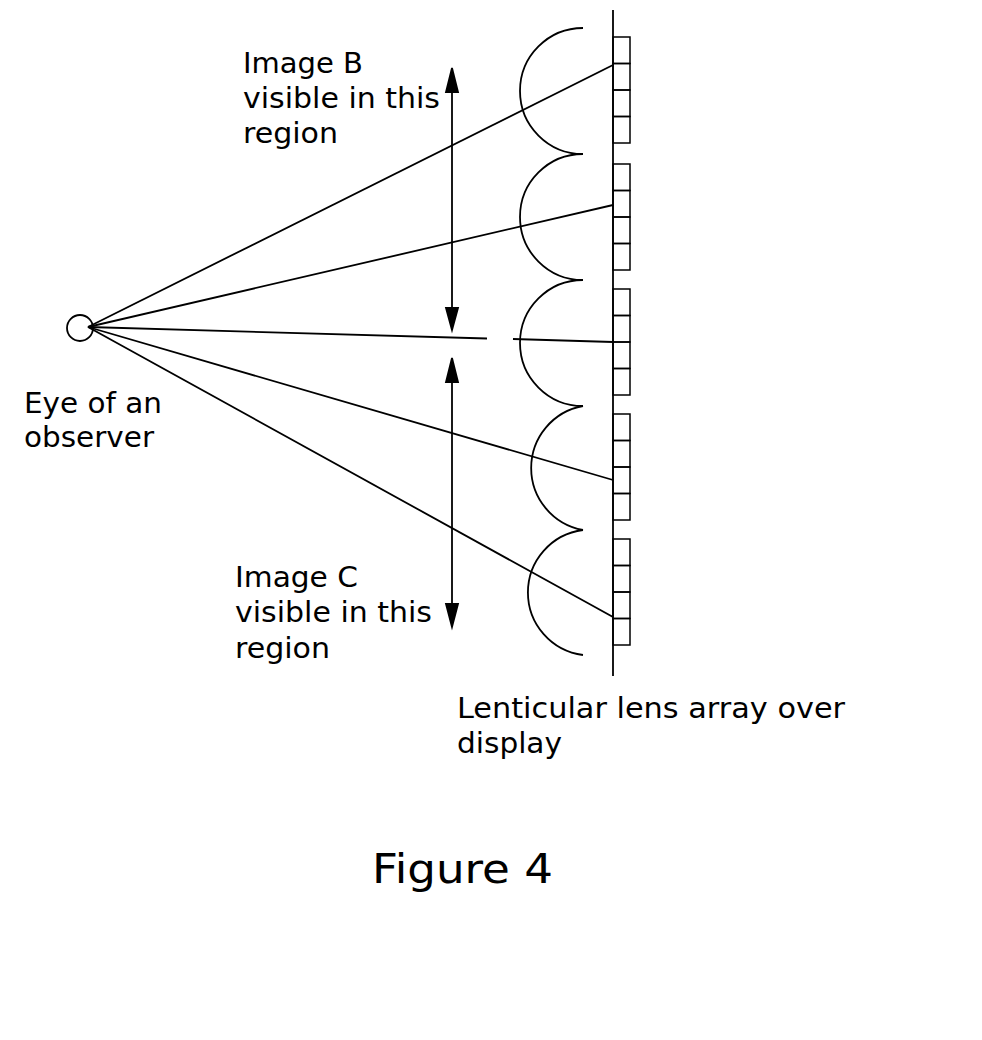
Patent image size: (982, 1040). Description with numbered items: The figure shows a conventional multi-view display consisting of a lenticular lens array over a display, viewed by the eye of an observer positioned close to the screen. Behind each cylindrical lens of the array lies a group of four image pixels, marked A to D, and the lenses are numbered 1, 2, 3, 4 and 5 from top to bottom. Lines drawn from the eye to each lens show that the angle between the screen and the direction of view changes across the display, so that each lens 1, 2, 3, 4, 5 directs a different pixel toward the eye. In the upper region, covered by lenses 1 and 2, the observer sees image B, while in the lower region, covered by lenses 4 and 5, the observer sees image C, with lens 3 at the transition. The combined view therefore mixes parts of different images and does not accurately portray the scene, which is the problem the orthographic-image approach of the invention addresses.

The lenticular lens 1 with pixel group A-D 1 is at (578, 91).
The lenticular lens 2 with pixel group A-D 2 is at (578, 217).
The lenticular lens 3 with pixel group A-D 3 is at (576, 343).
The lenticular lens 4 with pixel group A-D 4 is at (577, 468).
The lenticular lens 5 with pixel group A-D 5 is at (577, 592).